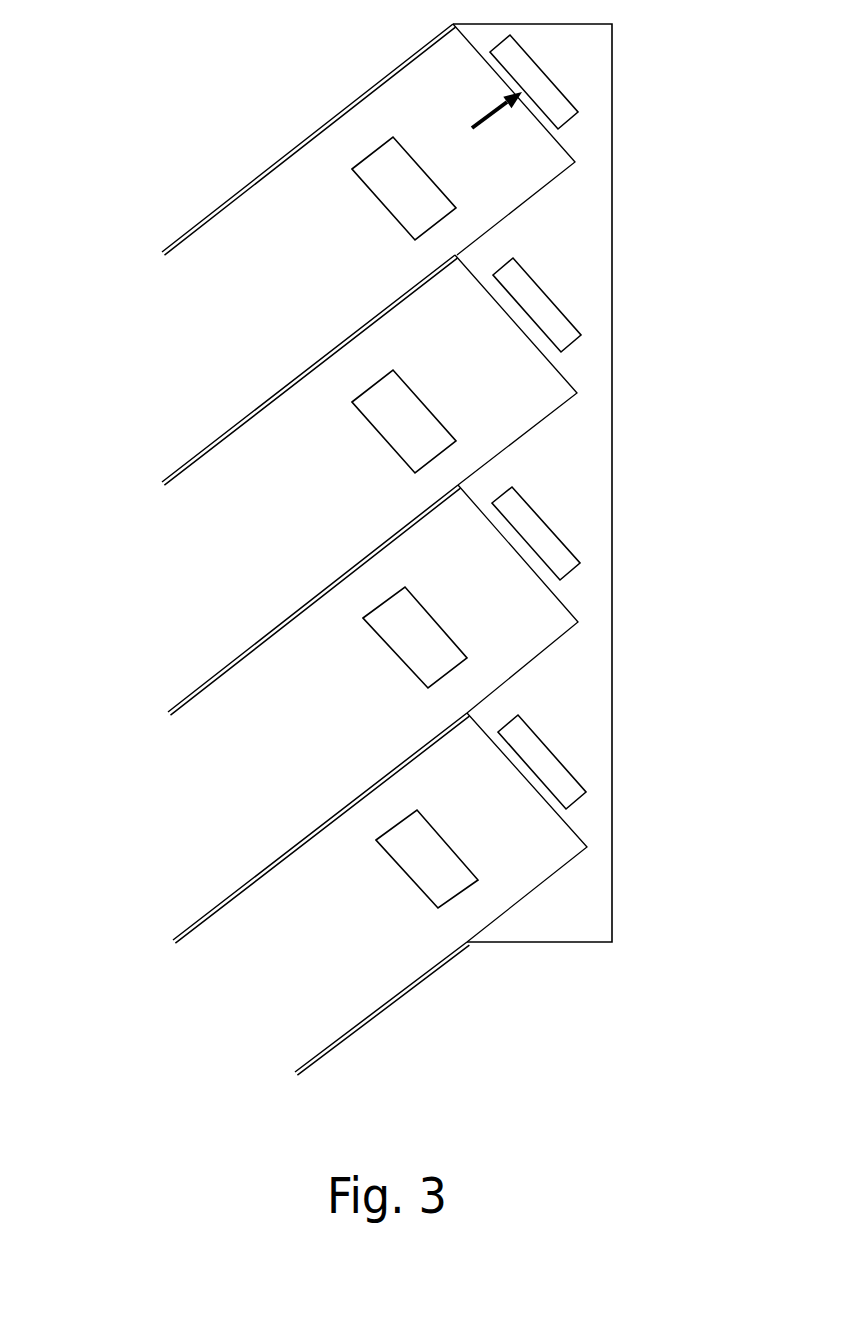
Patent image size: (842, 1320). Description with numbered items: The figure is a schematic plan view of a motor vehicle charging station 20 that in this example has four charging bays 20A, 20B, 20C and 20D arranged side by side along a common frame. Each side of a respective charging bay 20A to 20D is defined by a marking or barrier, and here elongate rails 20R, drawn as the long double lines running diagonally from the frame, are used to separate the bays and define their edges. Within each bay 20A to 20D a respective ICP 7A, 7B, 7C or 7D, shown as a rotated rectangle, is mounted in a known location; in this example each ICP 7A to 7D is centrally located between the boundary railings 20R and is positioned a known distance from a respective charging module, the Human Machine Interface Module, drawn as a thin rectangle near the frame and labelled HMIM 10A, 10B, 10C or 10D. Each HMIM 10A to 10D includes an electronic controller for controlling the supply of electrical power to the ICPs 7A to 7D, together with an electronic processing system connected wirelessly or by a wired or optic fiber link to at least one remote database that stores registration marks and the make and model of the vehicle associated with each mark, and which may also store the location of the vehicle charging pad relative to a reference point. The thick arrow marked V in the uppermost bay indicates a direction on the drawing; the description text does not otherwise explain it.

The charging station 20 is at (615, 882).
The charging bay 20A is at (208, 313).
The charging bay 20B is at (208, 563).
The charging bay 20C is at (208, 809).
The charging bay 20D is at (208, 994).
The elongate rail 20R is at (152, 256).
The ICP 7A is at (370, 208).
The ICP 7B is at (370, 441).
The ICP 7C is at (384, 659).
The ICP 7D is at (398, 882).
The Human Machine Interface Module 10A is at (575, 86).
The Human Machine Interface Module 10B is at (573, 307).
The Human Machine Interface Module 10C is at (572, 532).
The Human Machine Interface Module 10D is at (573, 751).
The direction V is at (485, 121).